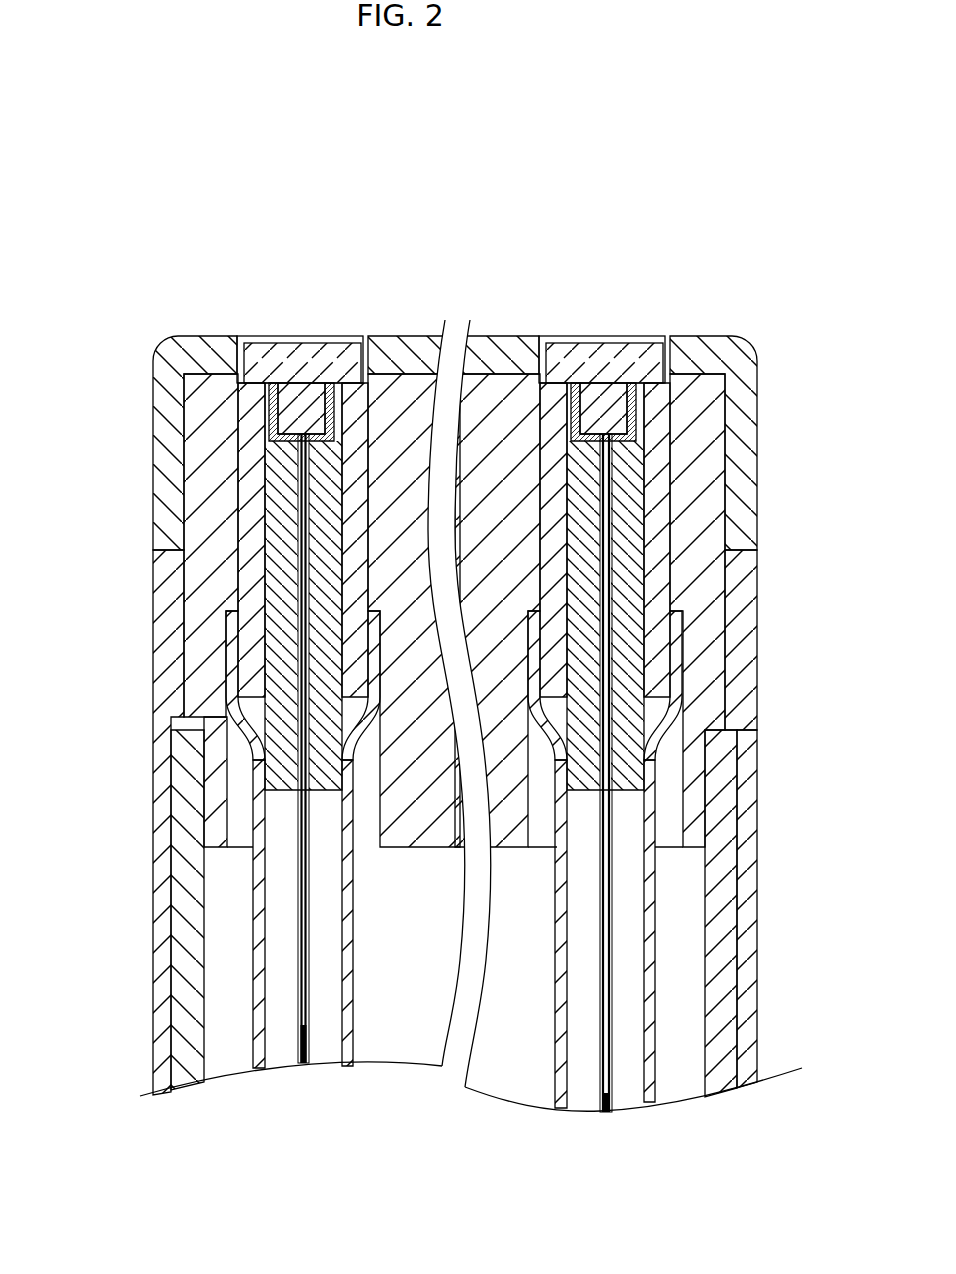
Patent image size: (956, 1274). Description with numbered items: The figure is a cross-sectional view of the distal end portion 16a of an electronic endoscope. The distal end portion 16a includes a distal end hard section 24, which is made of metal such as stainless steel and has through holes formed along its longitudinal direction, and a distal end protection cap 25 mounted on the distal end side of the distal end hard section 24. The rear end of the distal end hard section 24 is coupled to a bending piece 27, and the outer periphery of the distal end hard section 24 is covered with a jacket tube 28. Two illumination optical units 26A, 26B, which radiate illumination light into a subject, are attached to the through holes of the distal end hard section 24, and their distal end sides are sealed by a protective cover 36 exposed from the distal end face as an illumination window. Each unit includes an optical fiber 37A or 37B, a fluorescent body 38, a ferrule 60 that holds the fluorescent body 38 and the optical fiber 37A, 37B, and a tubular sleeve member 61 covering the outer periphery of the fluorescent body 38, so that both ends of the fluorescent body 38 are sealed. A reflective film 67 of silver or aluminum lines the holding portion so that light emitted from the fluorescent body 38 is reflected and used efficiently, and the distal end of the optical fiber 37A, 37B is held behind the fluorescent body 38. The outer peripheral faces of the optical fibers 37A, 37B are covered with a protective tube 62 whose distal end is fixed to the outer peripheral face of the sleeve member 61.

The distal end portion 16a is at (135, 268).
The distal end protection cap 25 is at (193, 352).
The distal end hard section 24 is at (217, 440).
The jacket tube 28 is at (172, 668).
The bending piece 27 is at (186, 957).
The illumination optical unit 26A is at (296, 331).
The illumination optical unit 26B is at (596, 331).
The protective cover 36 is at (275, 362).
The fluorescent body 38 is at (304, 404).
The sleeve member 61 is at (352, 466).
The reflective film 67 is at (276, 447).
The ferrule 60 is at (247, 695).
The protective tube 62 is at (260, 1017).
The optical fiber 37A is at (305, 1067).
The optical fiber 37B is at (607, 1114).